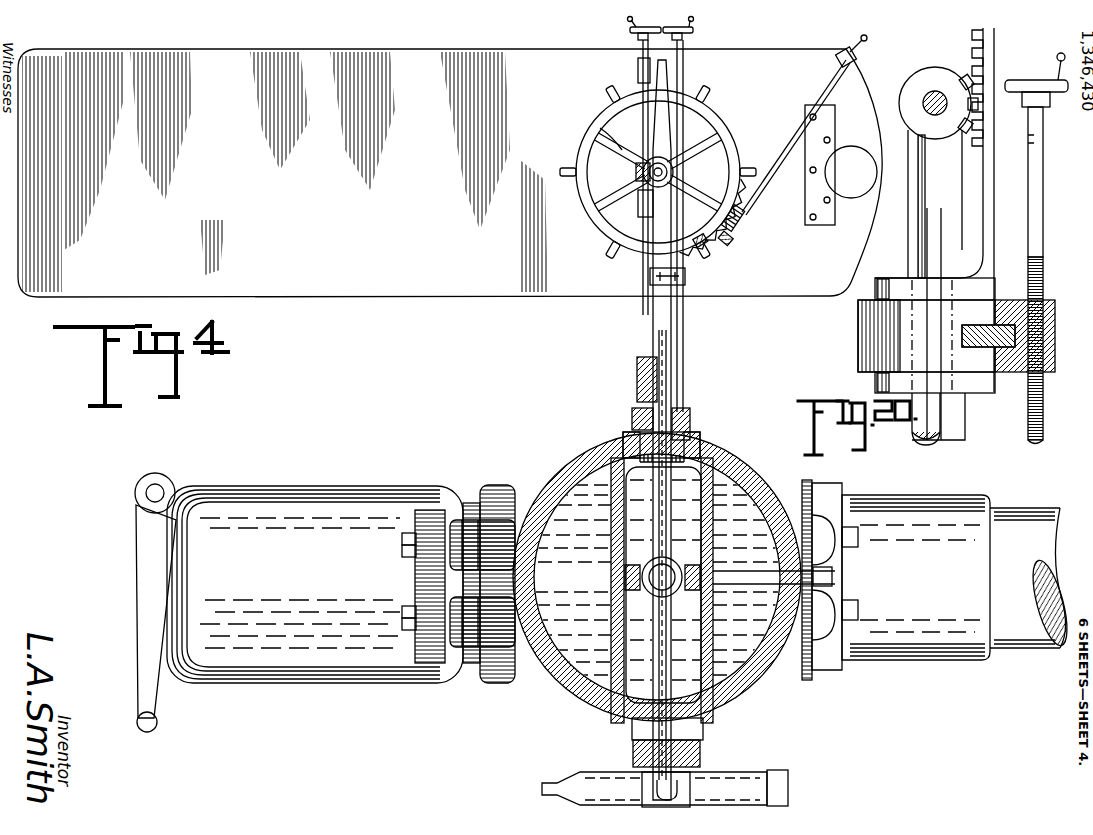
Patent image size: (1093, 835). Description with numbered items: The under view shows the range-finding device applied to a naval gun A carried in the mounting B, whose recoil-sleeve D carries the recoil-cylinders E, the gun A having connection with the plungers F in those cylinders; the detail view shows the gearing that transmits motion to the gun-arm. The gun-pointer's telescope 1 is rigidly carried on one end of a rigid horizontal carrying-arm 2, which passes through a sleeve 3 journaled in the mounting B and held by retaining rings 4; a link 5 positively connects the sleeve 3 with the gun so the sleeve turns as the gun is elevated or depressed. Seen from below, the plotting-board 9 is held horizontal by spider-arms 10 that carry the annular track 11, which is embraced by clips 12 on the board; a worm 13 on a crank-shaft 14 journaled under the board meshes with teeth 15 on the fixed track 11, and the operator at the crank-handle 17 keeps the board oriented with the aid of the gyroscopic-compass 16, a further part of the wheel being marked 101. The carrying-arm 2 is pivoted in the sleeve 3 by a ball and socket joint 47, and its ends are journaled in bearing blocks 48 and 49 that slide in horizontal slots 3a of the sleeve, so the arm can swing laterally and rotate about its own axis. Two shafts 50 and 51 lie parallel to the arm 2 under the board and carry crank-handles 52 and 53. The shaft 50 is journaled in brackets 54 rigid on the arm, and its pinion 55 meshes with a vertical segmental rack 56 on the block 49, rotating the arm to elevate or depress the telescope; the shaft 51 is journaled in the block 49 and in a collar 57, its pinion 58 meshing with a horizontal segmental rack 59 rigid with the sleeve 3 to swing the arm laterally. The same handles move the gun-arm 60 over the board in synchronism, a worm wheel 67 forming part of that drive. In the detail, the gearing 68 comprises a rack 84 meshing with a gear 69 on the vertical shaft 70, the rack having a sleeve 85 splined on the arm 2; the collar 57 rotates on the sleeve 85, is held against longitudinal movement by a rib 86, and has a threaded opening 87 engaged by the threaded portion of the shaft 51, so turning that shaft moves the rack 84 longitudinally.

In FIG. 4, the gun-pointer's telescope 1 is at (760, 776).
In FIG. 4, the carrying-arm 2 is at (668, 352).
In FIG. 20, the carrying-arm 2 is at (946, 435).
In FIG. 4, the sleeve 3 is at (568, 492).
In FIG. 4, the slots 3a is at (630, 432).
In FIG. 4, the retaining rings 4 is at (628, 442).
In FIG. 4, the link 5 is at (815, 655).
In FIG. 4, the plate 9 is at (530, 272).
In FIG. 4, the spider-arms 10 is at (623, 150).
In FIG. 4, the annular track 11 is at (730, 152).
In FIG. 4, the clips 12 is at (712, 97).
In FIG. 4, the worm 13 is at (745, 222).
In FIG. 4, the crank-shaft 14 is at (790, 168).
In FIG. 4, the teeth 15 is at (700, 252).
In FIG. 4, the gyroscopic-compass 16 is at (851, 180).
In FIG. 4, the crank-handle 17 is at (866, 50).
In FIG. 4, the ball and socket joint 47 is at (641, 578).
In FIG. 4, the bearing block 48 is at (705, 735).
In FIG. 4, the bearing block 49 is at (690, 428).
In FIG. 4, the shaft 50 is at (652, 336).
In FIG. 4, the shaft 51 is at (684, 368).
In FIG. 20, the shaft 51 is at (1044, 400).
In FIG. 4, the crank-handle 52 is at (632, 31).
In FIG. 20, the crank-handle 52 is at (1033, 80).
In FIG. 4, the crank-handle 53 is at (692, 31).
In FIG. 4, the brackets 54 is at (638, 68).
In FIG. 4, the pinion 55 is at (647, 400).
In FIG. 4, the segmental rack 56 is at (631, 418).
In FIG. 4, the collar 57 is at (690, 288).
In FIG. 20, the collar 57 is at (1000, 372).
In FIG. 4, the pinion 58 is at (712, 444).
In FIG. 4, the segmental rack 59 is at (618, 460).
In FIG. 4, the gun-arm 60 is at (650, 160).
In FIG. 4, the worm wheel 67 is at (600, 128).
In FIG. 20, the gearing 68 is at (972, 62).
In FIG. 20, the gear 69 is at (924, 88).
In FIG. 20, the vertical shaft 70 is at (930, 118).
In FIG. 4, the rack 84 is at (676, 172).
In FIG. 20, the rack 84 is at (968, 85).
In FIG. 20, the sleeve 85 is at (950, 388).
In FIG. 20, the rib 86 is at (1000, 326).
In FIG. 20, the threaded opening 87 is at (1040, 305).
In FIG. 4, the gear teeth 101 is at (718, 204).
In FIG. 4, the naval gun A is at (299, 602).
In FIG. 4, the mounting B is at (758, 458).
In FIG. 4, the recoil-sleeve D is at (488, 485).
In FIG. 4, the recoil-cylinders E is at (450, 581).
In FIG. 4, the plungers F is at (402, 545).